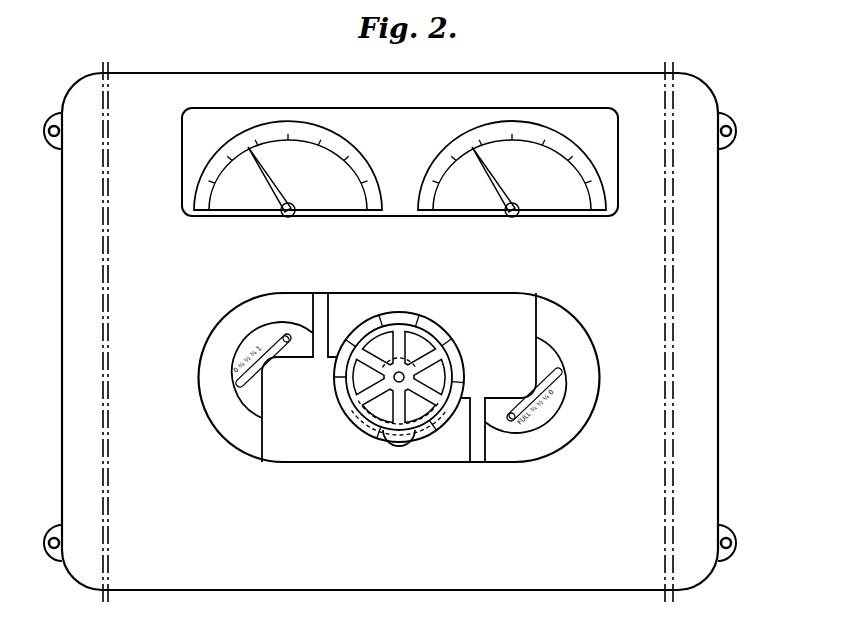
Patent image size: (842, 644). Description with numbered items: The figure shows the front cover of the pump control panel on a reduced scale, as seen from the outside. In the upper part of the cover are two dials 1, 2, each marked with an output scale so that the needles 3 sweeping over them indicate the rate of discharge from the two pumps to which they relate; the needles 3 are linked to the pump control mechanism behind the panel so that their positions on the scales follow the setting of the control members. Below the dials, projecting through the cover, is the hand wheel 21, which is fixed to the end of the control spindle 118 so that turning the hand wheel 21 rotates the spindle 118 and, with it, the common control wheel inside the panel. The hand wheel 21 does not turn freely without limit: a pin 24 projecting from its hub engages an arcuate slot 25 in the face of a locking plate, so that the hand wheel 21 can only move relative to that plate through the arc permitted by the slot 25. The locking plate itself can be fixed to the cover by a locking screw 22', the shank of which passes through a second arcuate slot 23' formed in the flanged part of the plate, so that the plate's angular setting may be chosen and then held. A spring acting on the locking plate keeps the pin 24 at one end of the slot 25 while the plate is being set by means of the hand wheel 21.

The dial 1 is at (360, 153).
The dial 2 is at (447, 150).
The needle 3 is at (272, 177).
The hand wheel 21 is at (403, 396).
The locking screw 22' is at (391, 448).
The arcuate slot 23' is at (403, 452).
The pin 24 is at (447, 358).
The arcuate slot 25 is at (413, 365).
The spindle 118 is at (394, 377).